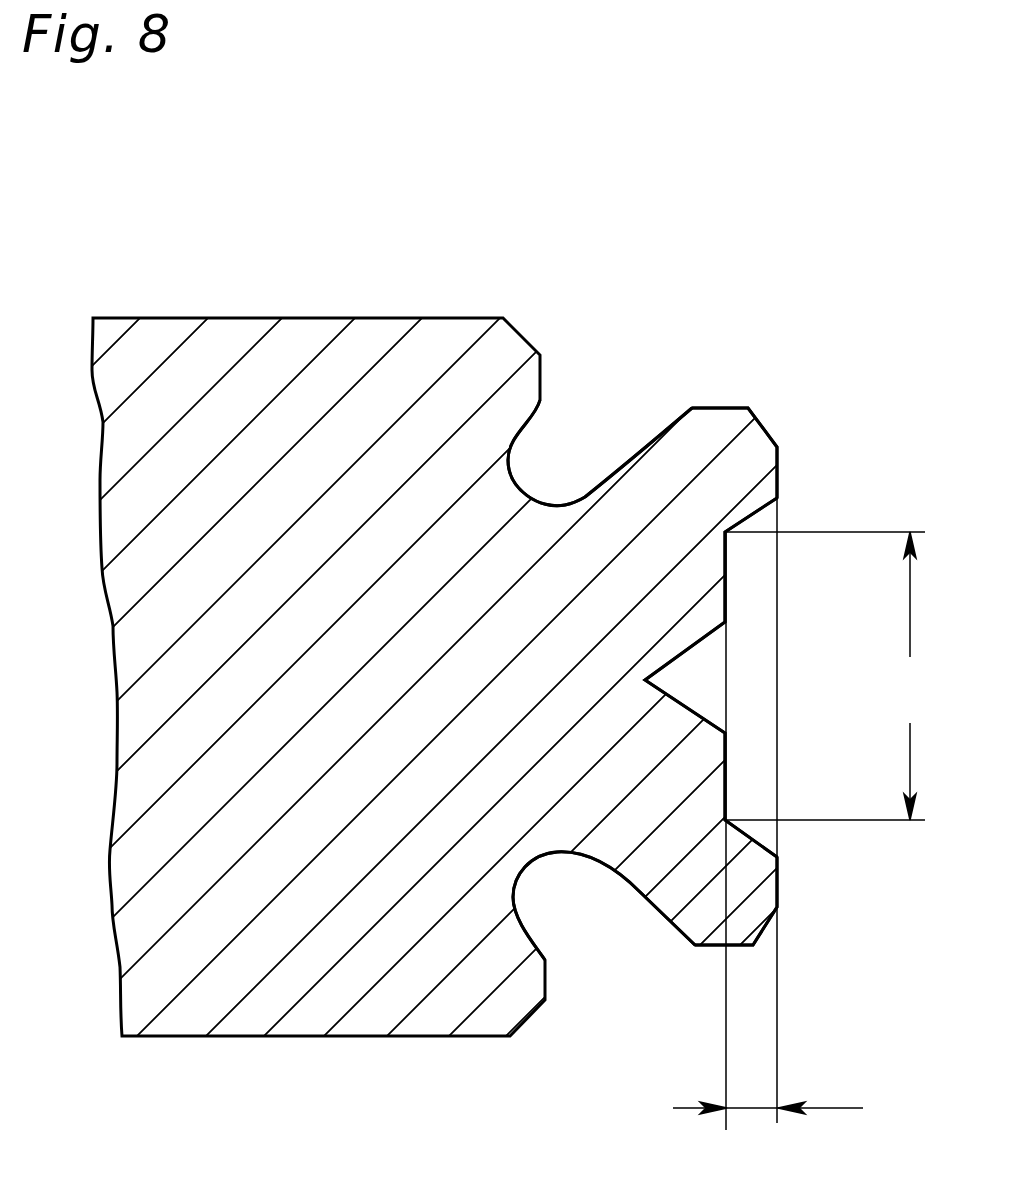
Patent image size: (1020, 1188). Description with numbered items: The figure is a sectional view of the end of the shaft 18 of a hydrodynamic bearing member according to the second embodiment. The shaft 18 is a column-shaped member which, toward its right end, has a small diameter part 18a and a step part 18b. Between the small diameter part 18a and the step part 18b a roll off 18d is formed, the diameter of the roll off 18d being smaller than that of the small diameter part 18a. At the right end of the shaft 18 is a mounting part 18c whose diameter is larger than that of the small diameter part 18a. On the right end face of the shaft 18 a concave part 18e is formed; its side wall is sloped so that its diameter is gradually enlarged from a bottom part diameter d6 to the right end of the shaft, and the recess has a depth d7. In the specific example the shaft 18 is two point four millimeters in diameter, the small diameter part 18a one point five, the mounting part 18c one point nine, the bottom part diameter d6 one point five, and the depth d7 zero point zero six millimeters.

The shaft 18 is at (228, 340).
The small diameter part 18a is at (583, 497).
The step part 18b is at (547, 370).
The mounting part 18c is at (728, 408).
The roll off 18d is at (527, 870).
The concave part 18e is at (725, 602).
The bottom part diameter d6 is at (825, 676).
The depth d7 is at (768, 814).